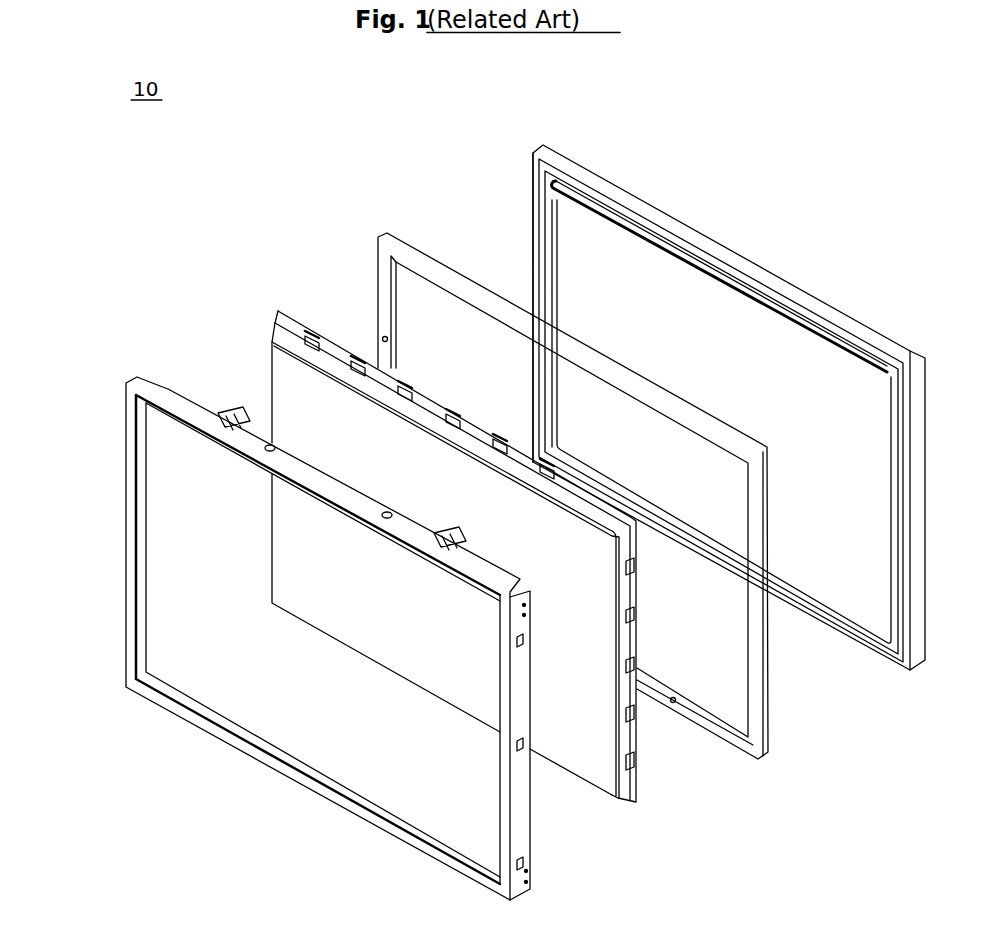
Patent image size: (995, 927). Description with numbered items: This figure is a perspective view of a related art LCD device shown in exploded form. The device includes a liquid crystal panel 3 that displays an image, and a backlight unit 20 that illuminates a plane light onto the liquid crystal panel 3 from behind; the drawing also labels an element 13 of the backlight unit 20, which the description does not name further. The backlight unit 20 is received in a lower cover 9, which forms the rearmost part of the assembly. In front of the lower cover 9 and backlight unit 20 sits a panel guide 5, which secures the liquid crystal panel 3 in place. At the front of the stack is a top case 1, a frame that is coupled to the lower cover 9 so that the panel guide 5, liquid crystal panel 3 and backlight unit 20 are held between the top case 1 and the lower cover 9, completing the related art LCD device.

The top case 1 is at (132, 644).
The liquid crystal panel 3 is at (283, 367).
The panel guide 5 is at (383, 288).
The lower cover 9 is at (908, 350).
The lamp 13 is at (617, 216).
The backlight unit 20 is at (720, 309).